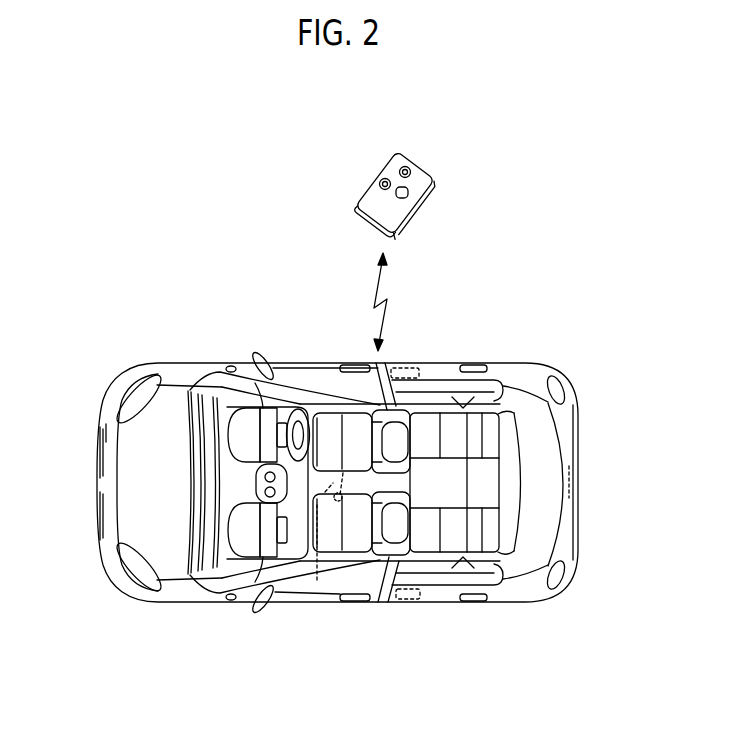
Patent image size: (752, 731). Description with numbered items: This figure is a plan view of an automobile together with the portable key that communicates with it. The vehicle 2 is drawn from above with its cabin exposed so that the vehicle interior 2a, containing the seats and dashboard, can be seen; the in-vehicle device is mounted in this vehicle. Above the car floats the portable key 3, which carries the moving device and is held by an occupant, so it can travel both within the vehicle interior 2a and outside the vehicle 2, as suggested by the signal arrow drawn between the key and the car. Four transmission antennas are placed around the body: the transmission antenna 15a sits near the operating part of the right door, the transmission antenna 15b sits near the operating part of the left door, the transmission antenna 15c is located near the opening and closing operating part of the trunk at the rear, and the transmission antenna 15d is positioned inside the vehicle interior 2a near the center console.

The vehicle 2 is at (100, 560).
The vehicle interior 2a is at (356, 434).
The portable key 3 is at (440, 178).
The transmission antenna 15a is at (407, 369).
The transmission antenna 15b is at (403, 603).
The transmission antenna 15c is at (577, 483).
The transmission antenna 15d is at (317, 580).